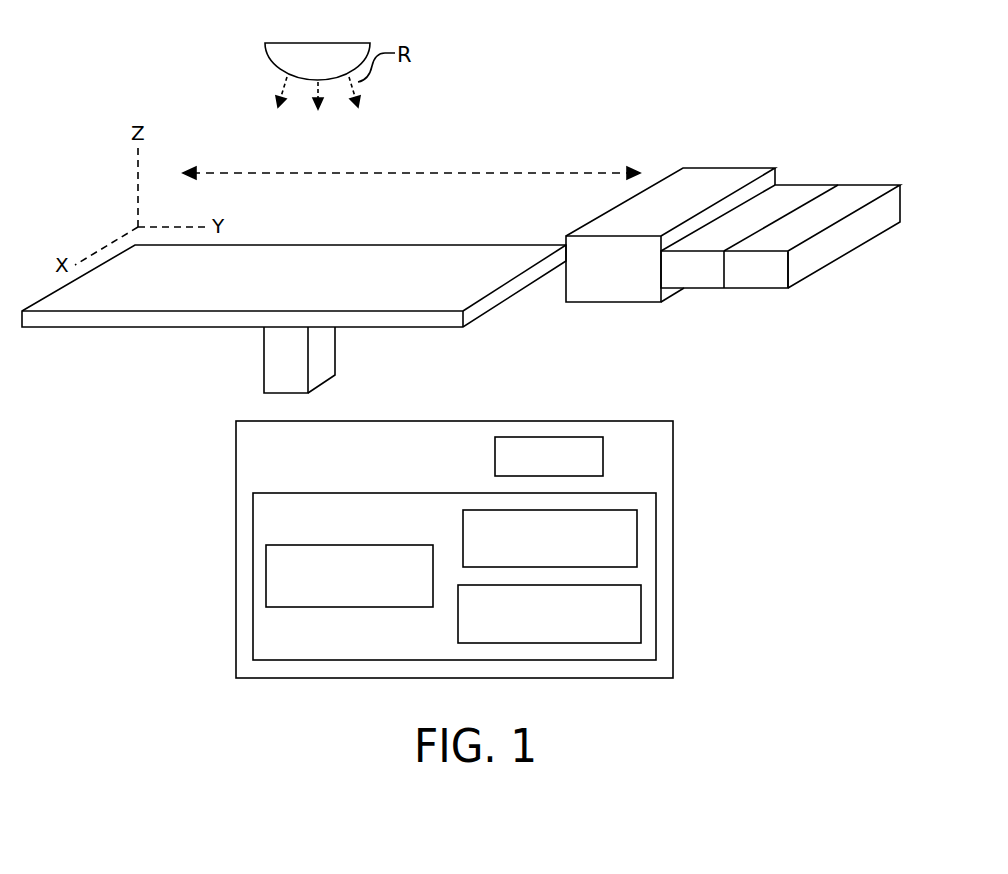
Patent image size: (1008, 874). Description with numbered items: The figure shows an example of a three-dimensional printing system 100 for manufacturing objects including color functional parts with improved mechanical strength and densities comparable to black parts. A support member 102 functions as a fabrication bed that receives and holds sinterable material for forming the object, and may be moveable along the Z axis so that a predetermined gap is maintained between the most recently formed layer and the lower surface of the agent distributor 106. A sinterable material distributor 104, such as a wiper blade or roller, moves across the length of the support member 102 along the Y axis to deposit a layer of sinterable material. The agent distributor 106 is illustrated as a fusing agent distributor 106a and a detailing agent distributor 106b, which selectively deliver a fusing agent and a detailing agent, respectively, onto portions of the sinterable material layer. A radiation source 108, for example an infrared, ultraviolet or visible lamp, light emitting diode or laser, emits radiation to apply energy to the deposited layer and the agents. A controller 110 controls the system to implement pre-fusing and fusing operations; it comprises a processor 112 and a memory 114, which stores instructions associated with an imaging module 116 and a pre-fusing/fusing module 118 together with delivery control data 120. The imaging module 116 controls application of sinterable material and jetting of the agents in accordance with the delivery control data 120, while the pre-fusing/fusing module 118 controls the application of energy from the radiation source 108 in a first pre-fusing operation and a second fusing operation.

The 3D printing system 100 is at (698, 35).
The support member 102 is at (405, 247).
The sinterable material distributor 104 is at (710, 175).
The agent distributor 106 is at (780, 232).
The fusing agent distributor 106a is at (697, 288).
The detailing agent distributor 106b is at (772, 288).
The radiation source 108 is at (293, 43).
The controller 110 is at (397, 461).
The processor (CPU) 112 is at (592, 468).
The memory 114 is at (410, 530).
The imaging module 116 is at (567, 560).
The pre-fusing/fusing module 118 is at (606, 633).
The delivery control data 120 is at (395, 598).